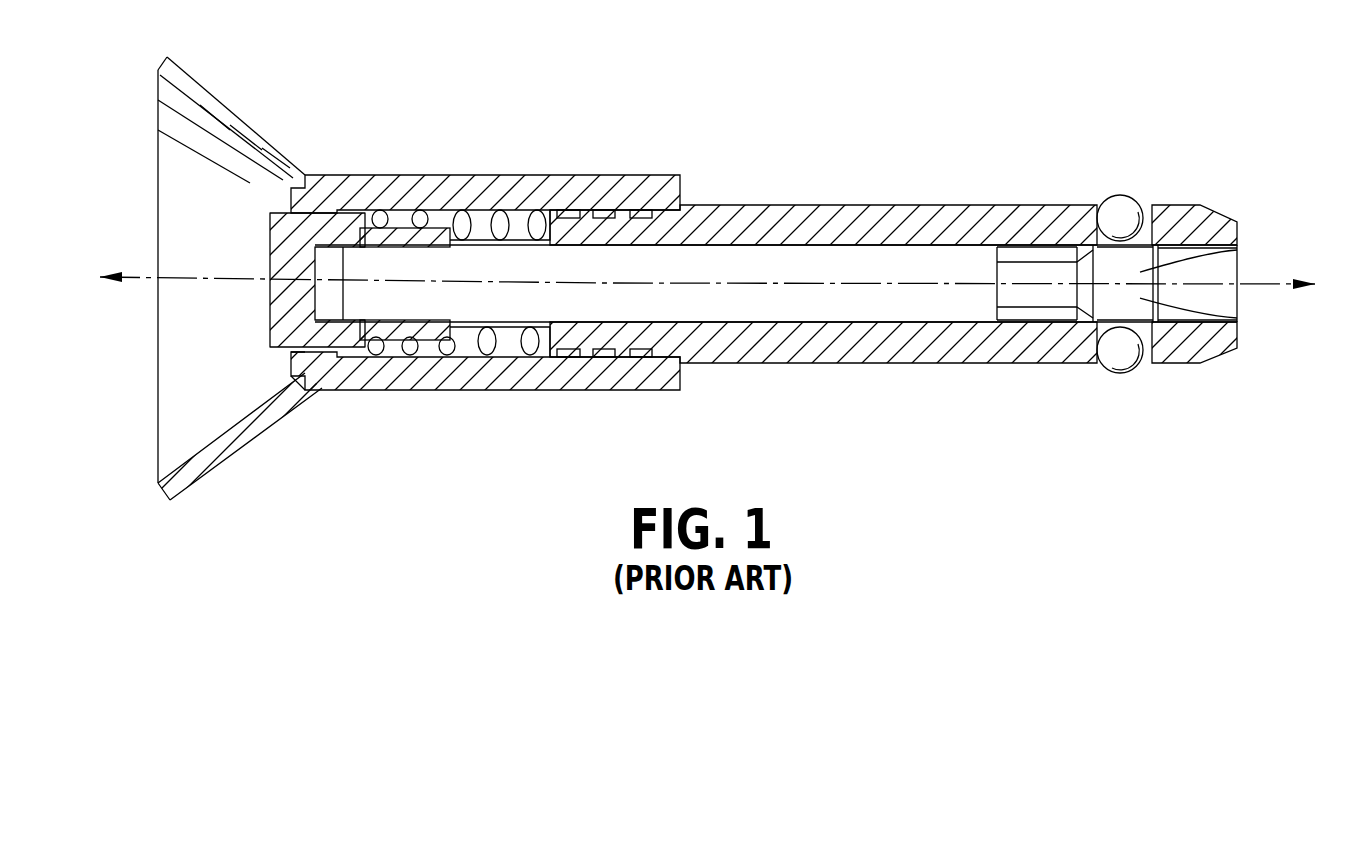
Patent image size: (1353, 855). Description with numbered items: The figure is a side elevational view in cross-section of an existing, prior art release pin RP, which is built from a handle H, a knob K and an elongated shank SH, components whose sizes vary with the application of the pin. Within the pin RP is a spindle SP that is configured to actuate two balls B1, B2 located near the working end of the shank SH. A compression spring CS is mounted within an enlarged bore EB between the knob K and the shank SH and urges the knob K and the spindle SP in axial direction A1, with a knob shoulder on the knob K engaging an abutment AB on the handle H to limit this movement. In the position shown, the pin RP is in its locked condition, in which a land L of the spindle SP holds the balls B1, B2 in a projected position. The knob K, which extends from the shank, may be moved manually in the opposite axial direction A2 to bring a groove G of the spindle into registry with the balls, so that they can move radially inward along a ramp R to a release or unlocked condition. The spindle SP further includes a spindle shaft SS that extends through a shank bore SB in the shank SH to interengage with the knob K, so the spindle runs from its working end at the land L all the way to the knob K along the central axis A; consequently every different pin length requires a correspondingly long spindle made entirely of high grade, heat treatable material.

The release pin RP is at (668, 62).
The compression spring CS is at (462, 222).
The shank bore SB is at (698, 245).
The longitudinal axis A is at (789, 283).
The ball B1 is at (1120, 195).
The ball B2 is at (1120, 373).
The knob K is at (268, 248).
The axial direction A1 is at (92, 281).
The axial direction A2 is at (1323, 288).
The land L is at (1202, 263).
The spindle SP is at (1140, 300).
The handle H is at (212, 462).
The abutment AB is at (328, 385).
The enlarged bore EB is at (466, 345).
The shank SH is at (625, 340).
The spindle shaft SS is at (893, 313).
The groove G is at (1023, 310).
The ramp R is at (1072, 312).